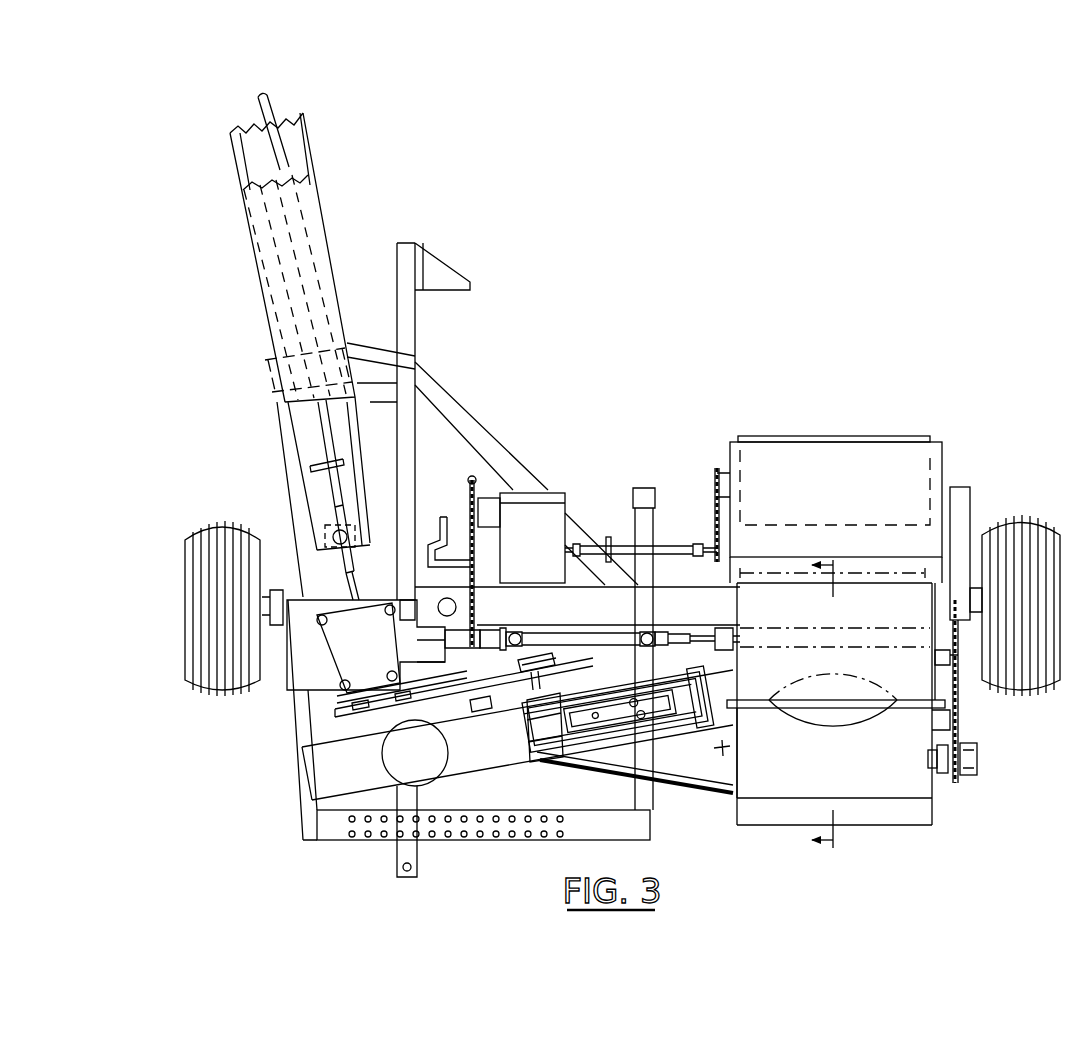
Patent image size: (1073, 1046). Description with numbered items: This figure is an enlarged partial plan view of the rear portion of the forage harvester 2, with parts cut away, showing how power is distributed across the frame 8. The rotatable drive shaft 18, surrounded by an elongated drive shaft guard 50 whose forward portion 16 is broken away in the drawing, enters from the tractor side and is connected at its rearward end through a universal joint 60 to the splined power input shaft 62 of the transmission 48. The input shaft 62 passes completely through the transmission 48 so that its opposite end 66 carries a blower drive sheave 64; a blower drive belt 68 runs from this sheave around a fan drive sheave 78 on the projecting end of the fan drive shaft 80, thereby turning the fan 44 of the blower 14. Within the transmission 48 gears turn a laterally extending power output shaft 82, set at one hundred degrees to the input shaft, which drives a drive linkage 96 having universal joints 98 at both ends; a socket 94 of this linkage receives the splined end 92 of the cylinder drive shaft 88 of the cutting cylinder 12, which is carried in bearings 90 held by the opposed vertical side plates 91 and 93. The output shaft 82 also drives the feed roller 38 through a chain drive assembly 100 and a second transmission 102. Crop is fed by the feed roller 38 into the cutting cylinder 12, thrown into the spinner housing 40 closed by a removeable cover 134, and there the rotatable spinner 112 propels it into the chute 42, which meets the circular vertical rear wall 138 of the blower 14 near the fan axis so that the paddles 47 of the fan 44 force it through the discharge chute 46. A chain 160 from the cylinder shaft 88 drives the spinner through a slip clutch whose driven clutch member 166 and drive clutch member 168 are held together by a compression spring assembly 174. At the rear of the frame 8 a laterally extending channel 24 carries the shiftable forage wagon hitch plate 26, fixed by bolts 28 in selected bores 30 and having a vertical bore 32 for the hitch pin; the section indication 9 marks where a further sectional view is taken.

The forage harvester 2 is at (230, 732).
The frame 8 is at (474, 415).
The section line 9 is at (822, 705).
The cutting cylinder 12 is at (897, 572).
The blower 14 is at (480, 775).
The rod 16 is at (290, 104).
The drive shaft 18 is at (313, 427).
The channel 24 is at (585, 835).
The forage wagon hitch plate 26 is at (395, 855).
The bolts 28 is at (415, 836).
The bores 30 is at (456, 844).
The vertical bore 32 is at (403, 869).
The feed roller 38 is at (905, 437).
The spinner housing 40 is at (900, 814).
The chute 42 is at (700, 777).
The fan 44 is at (672, 689).
The discharge chute 46 is at (383, 762).
The paddles 47 is at (620, 733).
The transmission 48 is at (333, 672).
The drive shaft guard 50 is at (238, 230).
The universal joint 60 is at (337, 537).
The power input shaft 62 is at (356, 587).
The blower drive sheave 64 is at (337, 725).
The opposite end of input shaft 66 is at (370, 730).
The blower drive belt 68 is at (478, 706).
The fan drive sheave 78 is at (585, 689).
The fan drive shaft 80 is at (545, 762).
The power output shaft 82 is at (456, 645).
The cylinder drive shaft 88 is at (898, 628).
The bearings 90 is at (718, 630).
The side plate 91 is at (716, 750).
The splined end 92 is at (681, 634).
The side plate 93 is at (938, 720).
The socket 94 is at (648, 633).
The drive linkage 96 is at (553, 634).
The universal joints 98 is at (515, 633).
The chain drive assembly 100 is at (470, 512).
The transmission 102 is at (553, 493).
The rotatable spinner 112 is at (797, 815).
The removeable cover 134 is at (752, 812).
The vertical rear wall 138 is at (308, 806).
The chain 160 is at (959, 728).
The driven clutch member 166 is at (976, 757).
The drive clutch member 168 is at (966, 783).
The compression spring assembly 174 is at (945, 780).